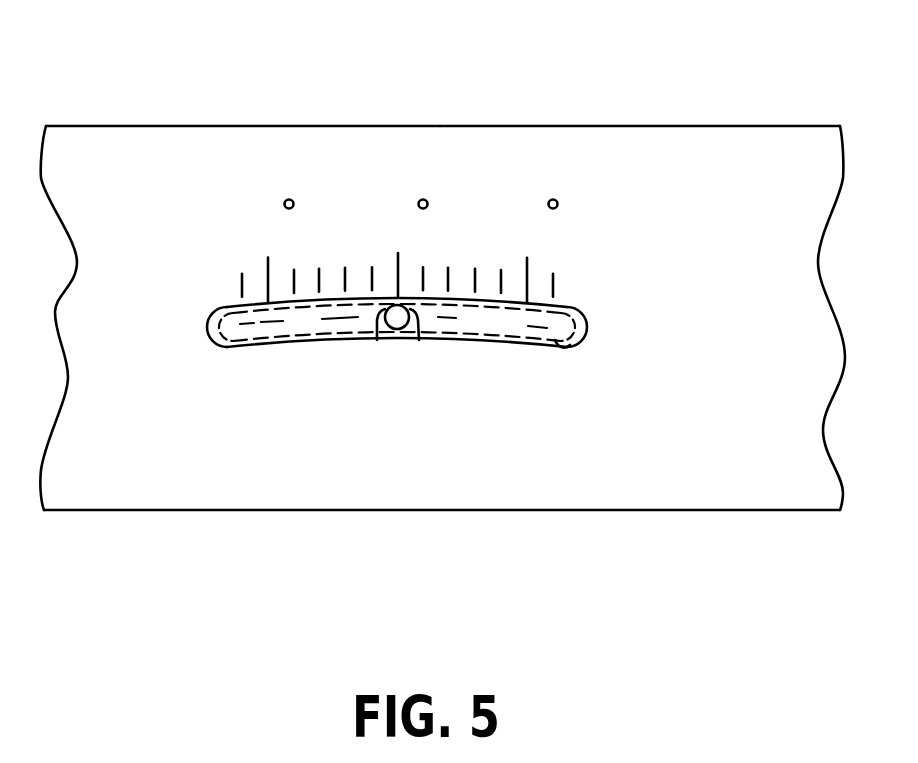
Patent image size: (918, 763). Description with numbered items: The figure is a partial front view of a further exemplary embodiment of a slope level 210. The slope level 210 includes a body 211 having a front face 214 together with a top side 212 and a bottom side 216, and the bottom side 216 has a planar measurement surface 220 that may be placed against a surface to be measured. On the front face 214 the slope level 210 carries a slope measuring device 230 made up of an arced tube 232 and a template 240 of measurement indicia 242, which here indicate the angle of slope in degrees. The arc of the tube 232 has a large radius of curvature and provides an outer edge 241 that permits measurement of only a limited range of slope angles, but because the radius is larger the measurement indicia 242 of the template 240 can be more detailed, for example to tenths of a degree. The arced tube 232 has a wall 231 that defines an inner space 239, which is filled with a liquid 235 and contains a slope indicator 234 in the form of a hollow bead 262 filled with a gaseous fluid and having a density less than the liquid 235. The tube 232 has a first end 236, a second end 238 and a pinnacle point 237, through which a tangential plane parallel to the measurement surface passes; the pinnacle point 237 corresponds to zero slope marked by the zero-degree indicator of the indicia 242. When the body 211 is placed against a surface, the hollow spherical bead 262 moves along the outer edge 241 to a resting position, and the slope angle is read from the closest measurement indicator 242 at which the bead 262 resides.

The slope level 210 is at (160, 84).
The body 211 is at (533, 126).
The top side 212 is at (308, 126).
The front face 214 is at (728, 150).
The bottom side 216 is at (182, 512).
The planar measurement surface 220 is at (56, 512).
The slope measuring device 230 is at (396, 329).
The wall 231 is at (283, 345).
The arced tube 232 is at (233, 303).
The slope indicator 234 is at (377, 340).
The liquid 235 is at (562, 333).
The first end 236 is at (587, 327).
The pinnacle point 237 is at (400, 297).
The second end 238 is at (212, 342).
The inner space 239 is at (240, 322).
The template 240 is at (547, 252).
The outer edge 241 is at (258, 307).
The measurement indicia 242 is at (322, 283).
The hollow bead 262 is at (419, 340).